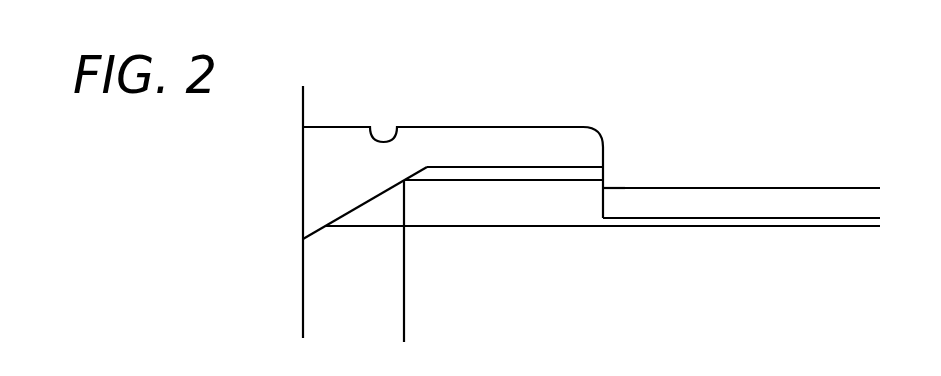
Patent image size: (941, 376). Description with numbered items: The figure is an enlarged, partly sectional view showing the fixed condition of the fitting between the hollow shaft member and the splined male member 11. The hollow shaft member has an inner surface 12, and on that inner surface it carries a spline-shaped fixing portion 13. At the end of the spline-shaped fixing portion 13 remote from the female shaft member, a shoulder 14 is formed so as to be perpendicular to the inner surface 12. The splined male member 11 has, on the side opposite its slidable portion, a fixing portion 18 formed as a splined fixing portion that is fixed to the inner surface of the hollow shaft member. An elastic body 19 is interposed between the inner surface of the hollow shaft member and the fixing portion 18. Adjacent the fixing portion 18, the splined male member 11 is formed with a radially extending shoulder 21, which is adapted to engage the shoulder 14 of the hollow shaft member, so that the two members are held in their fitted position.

The splined male member 11 is at (832, 282).
The inner surface 12 is at (395, 127).
The spline-shaped fixing portion 13 is at (830, 158).
The shoulder 14 is at (603, 207).
The fixing portion 18 is at (525, 198).
The elastic body 19 is at (475, 178).
The radially extending shoulder 21 is at (607, 188).